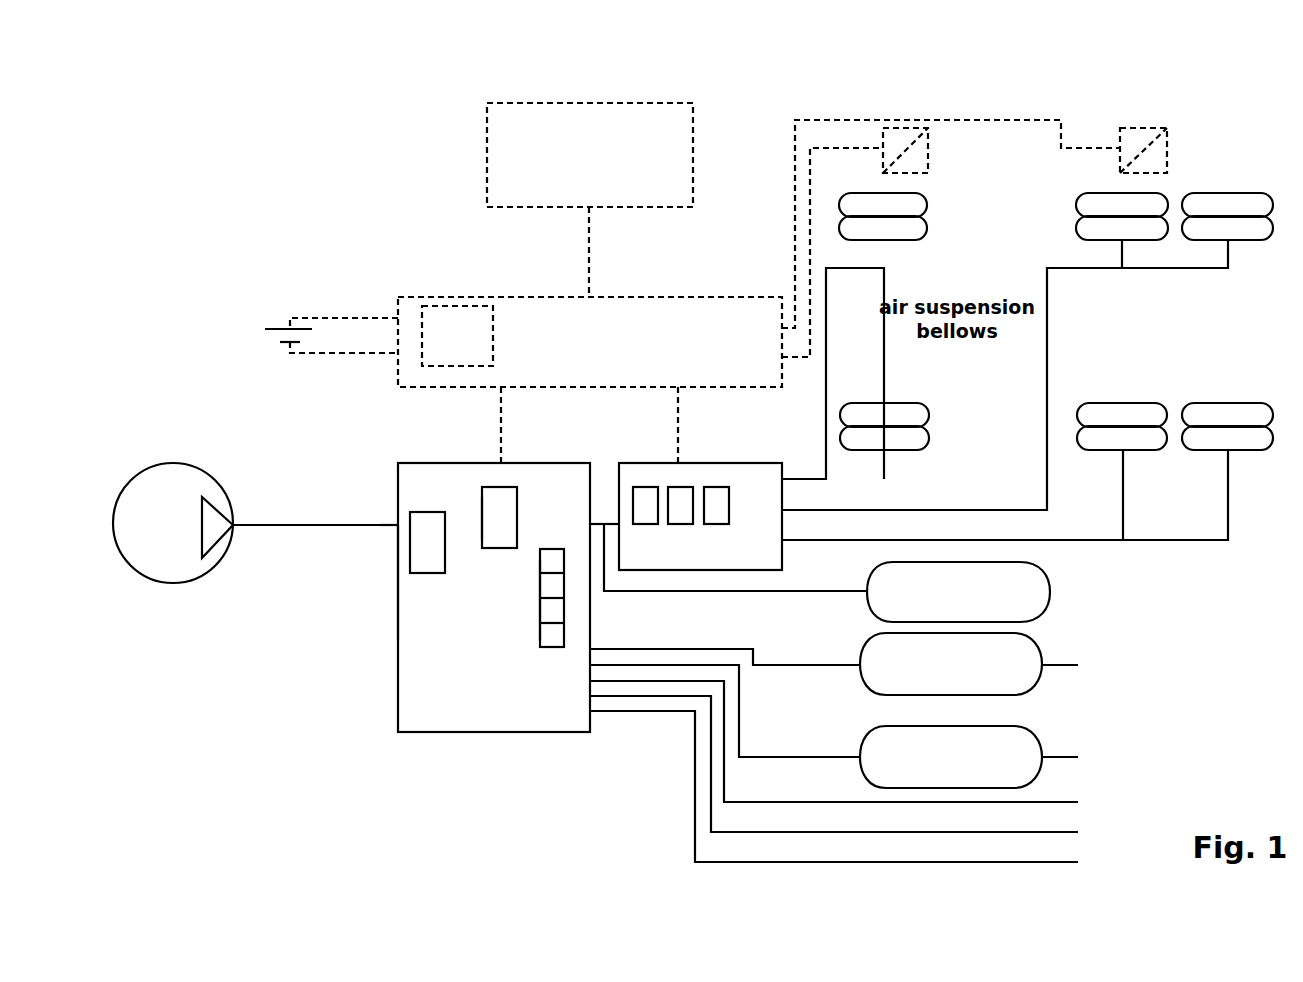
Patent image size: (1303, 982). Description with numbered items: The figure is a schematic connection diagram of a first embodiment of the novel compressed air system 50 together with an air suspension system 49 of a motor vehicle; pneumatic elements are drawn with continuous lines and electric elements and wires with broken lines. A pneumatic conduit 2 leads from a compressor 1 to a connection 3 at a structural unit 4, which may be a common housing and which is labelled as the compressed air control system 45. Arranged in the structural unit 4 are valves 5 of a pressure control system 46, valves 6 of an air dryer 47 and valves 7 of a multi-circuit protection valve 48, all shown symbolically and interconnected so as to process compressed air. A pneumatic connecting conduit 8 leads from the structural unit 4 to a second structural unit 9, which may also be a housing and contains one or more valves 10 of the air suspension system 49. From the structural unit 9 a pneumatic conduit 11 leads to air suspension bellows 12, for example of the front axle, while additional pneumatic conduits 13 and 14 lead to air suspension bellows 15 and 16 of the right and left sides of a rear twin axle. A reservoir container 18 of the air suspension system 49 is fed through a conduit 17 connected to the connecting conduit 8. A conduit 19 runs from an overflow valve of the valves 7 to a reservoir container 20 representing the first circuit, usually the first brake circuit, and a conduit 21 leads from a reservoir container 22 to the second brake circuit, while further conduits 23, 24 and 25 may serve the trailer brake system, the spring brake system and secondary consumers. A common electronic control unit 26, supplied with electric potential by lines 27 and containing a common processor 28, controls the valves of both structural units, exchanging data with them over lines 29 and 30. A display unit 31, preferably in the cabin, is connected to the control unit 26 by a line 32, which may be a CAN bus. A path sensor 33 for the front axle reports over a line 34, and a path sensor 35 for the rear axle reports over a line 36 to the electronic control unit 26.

The compressor 1 is at (175, 508).
The pneumatic conduit 2 is at (265, 525).
The connection 3 is at (397, 525).
The structural unit 4 is at (434, 733).
The valves 5 is at (410, 558).
The valves 6 is at (482, 520).
The valves 7 is at (552, 647).
The pneumatic connecting conduit 8 is at (597, 524).
The structural unit 9 is at (655, 570).
The valves 10 is at (678, 524).
The pneumatic conduit 11 is at (803, 478).
The air suspension bellows 12 is at (897, 232).
The pneumatic conduit 13 is at (957, 508).
The pneumatic conduit 14 is at (1066, 540).
The air suspension bellows 15 is at (1147, 210).
The air suspension bellows 16 is at (1130, 412).
The conduit 17 is at (793, 593).
The reservoir container 18 is at (1032, 593).
The conduit 19 is at (708, 648).
The reservoir container 20 is at (1013, 655).
The conduit 21 is at (797, 755).
The reservoir container 22 is at (1013, 743).
The conduit 23 is at (792, 802).
The conduit 24 is at (798, 832).
The conduit 25 is at (797, 862).
The electronic control unit 26 is at (698, 332).
The lines 27 is at (278, 329).
The processor 28 is at (442, 323).
The line 29 is at (497, 423).
The line 30 is at (678, 427).
The display unit 31 is at (660, 136).
The line 32 is at (589, 253).
The path sensor 33 is at (928, 158).
The line 34 is at (828, 150).
The path sensor 35 is at (1160, 148).
The line 36 is at (1053, 122).
The compressed air control system 45 is at (354, 605).
The pressure control system 46 is at (380, 544).
The air dryer 47 is at (464, 486).
The multi-circuit protection valve 48 is at (530, 620).
The air suspension system 49 is at (715, 451).
The compressed air system 50 is at (294, 173).